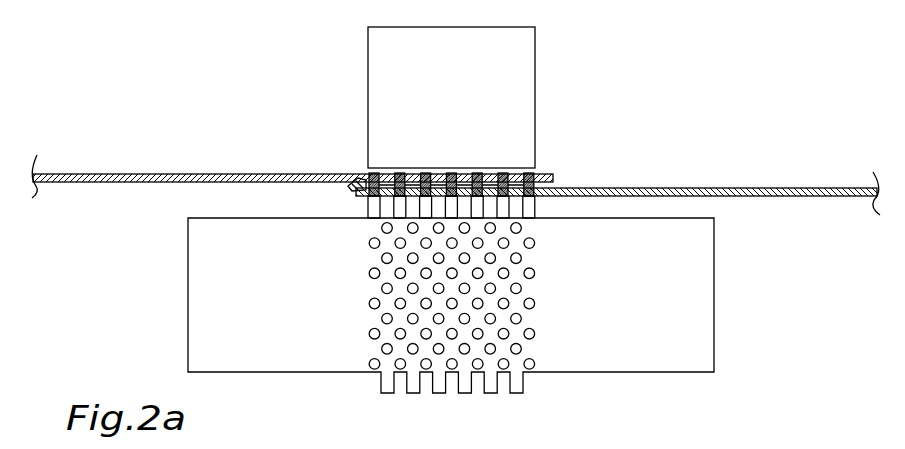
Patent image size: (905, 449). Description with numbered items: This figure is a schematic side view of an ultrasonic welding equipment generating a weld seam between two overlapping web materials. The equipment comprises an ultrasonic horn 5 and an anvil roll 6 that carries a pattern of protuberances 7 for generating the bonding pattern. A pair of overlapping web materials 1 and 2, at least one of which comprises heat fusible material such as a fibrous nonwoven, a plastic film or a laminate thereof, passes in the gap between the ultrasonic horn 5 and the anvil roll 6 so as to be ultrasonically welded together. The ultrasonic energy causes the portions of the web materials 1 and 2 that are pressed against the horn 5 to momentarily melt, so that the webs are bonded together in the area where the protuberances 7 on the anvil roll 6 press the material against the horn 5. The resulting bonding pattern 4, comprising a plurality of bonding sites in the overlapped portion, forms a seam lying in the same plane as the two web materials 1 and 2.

The web material 1 is at (238, 175).
The web material 2 is at (684, 192).
The bonding pattern 4 is at (340, 182).
The ultrasonic horn 5 is at (490, 97).
The anvil roll 6 is at (681, 302).
The protuberances 7 is at (517, 383).